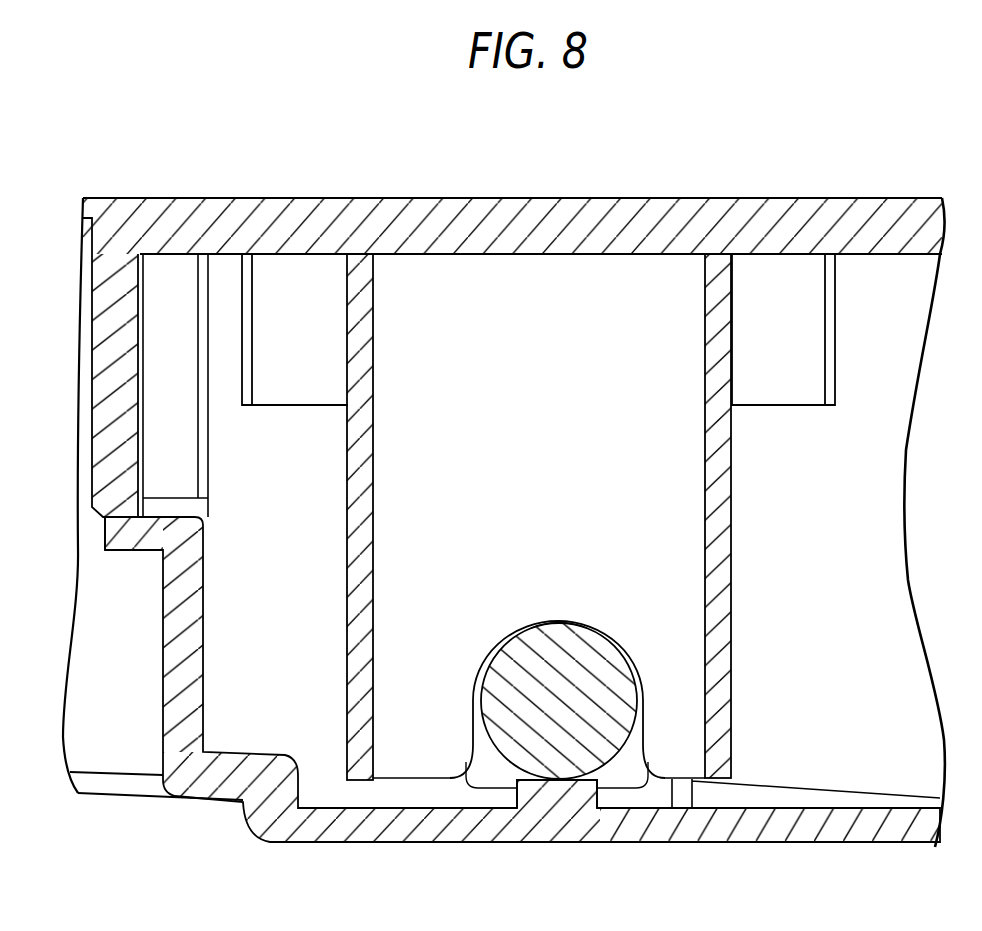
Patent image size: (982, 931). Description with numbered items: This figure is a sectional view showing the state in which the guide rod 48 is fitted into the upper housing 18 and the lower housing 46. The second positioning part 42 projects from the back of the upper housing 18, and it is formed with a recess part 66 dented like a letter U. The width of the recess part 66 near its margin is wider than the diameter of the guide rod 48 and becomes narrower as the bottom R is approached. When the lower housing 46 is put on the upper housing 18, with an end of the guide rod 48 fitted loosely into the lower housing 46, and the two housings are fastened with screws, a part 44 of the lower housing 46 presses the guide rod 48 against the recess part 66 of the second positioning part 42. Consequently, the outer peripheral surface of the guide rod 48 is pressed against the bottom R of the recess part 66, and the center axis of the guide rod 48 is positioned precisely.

The upper housing 18 is at (508, 218).
The second positioning part 42 is at (346, 589).
The part surrounded by the second rib 44 is at (565, 776).
The lower housing 46 is at (803, 833).
The guide rod 48 is at (507, 672).
The recess part 66 is at (518, 646).
The bottom R is at (548, 622).